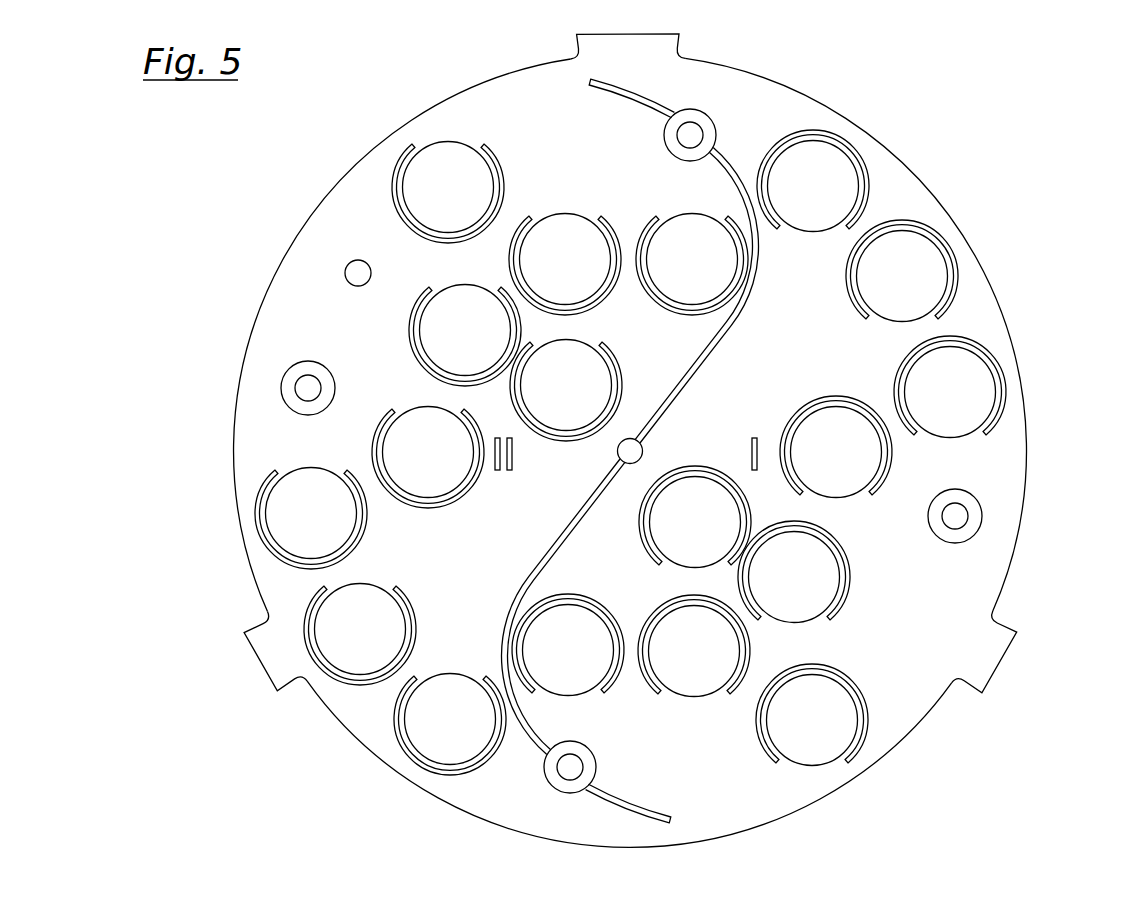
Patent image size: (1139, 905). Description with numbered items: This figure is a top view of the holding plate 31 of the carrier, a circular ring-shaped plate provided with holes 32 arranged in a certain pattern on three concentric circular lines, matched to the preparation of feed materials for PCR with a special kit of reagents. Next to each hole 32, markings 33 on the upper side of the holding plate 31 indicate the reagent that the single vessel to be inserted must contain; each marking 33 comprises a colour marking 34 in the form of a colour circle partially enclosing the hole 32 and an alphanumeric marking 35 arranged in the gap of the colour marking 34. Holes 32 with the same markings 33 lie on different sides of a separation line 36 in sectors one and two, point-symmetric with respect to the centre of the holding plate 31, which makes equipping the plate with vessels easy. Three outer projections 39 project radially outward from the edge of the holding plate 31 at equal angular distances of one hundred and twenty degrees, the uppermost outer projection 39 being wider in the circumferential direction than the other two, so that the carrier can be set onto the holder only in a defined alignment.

The holding plate 31 is at (585, 172).
The holes 32 is at (290, 507).
The markings 33 is at (247, 461).
The colour marking 34 is at (259, 552).
The alphanumeric marking 35 is at (287, 455).
The separation line 36 is at (577, 527).
The outer projections 39 is at (650, 48).